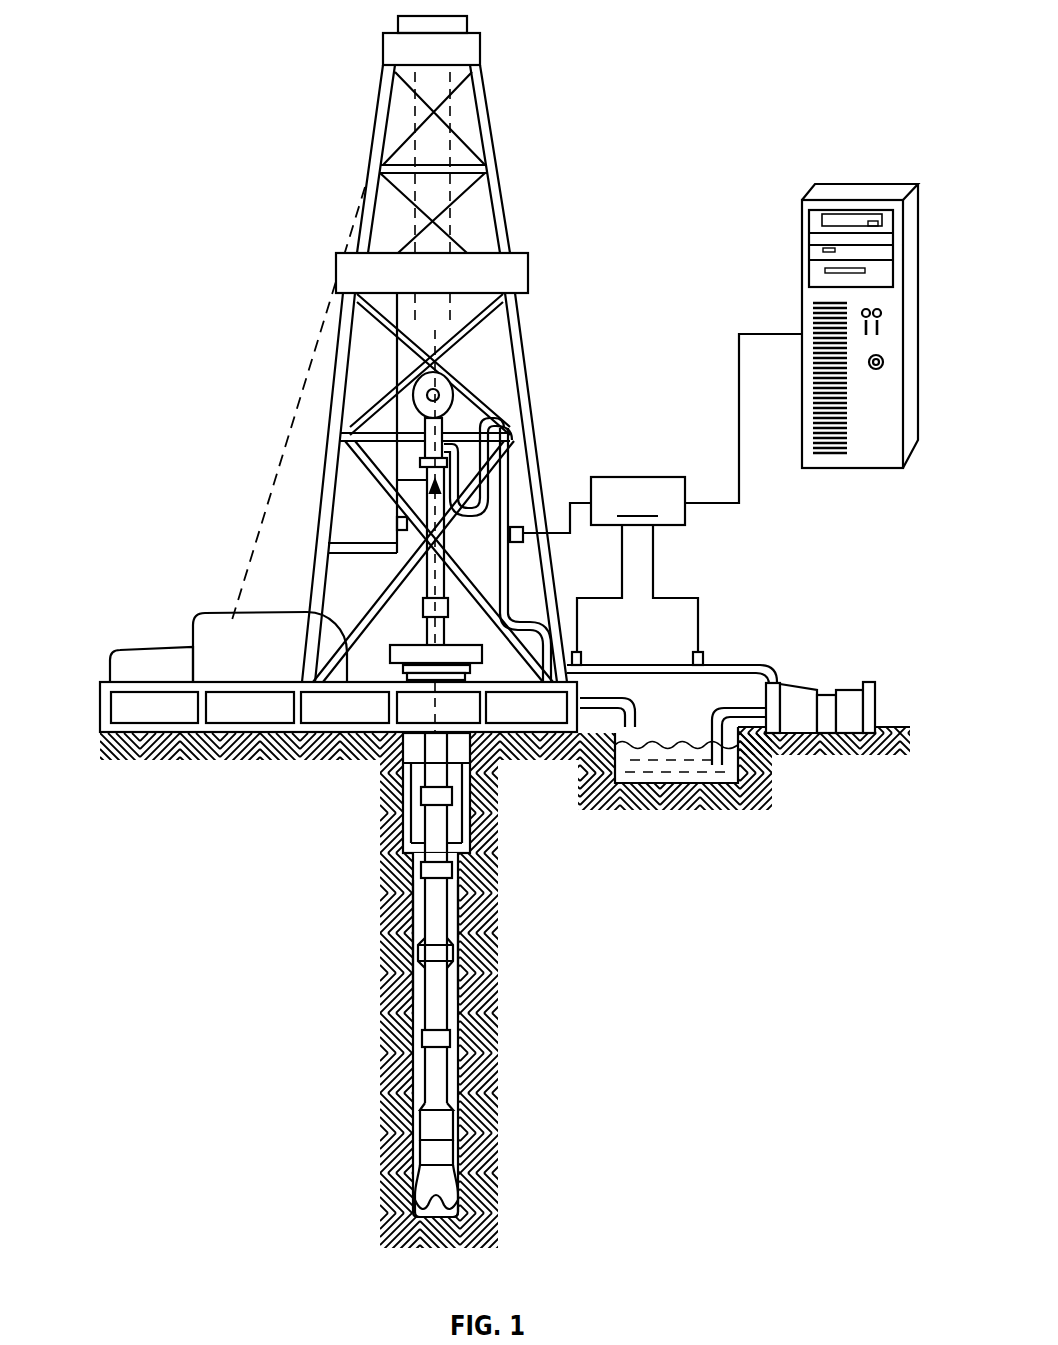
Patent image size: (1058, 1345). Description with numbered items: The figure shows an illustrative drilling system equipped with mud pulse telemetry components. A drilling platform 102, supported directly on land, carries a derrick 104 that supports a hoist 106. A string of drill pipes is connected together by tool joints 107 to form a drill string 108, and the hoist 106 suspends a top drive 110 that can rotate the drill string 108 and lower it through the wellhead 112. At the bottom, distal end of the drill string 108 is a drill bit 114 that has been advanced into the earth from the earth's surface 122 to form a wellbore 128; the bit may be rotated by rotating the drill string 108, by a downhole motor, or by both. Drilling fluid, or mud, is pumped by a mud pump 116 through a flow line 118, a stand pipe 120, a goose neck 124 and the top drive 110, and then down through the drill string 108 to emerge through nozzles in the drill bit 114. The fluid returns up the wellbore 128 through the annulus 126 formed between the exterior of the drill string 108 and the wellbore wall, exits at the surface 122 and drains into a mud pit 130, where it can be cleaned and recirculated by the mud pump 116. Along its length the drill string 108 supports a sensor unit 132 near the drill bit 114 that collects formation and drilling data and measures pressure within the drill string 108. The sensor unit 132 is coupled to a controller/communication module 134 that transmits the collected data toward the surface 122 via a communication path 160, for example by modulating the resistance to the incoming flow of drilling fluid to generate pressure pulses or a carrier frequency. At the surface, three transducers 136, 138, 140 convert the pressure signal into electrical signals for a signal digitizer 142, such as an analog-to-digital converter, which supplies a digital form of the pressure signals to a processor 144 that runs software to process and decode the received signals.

The drilling platform 102 is at (100, 710).
The derrick 104 is at (490, 105).
The hoist 106 is at (440, 396).
The tool joints 107 is at (436, 865).
The drill string 108 is at (447, 903).
The top drive 110 is at (440, 488).
The wellhead 112 is at (403, 643).
The drill bit 114 is at (450, 1200).
The mud pump 116 is at (795, 700).
The flow line 118 is at (716, 675).
The stand pipe 120 is at (510, 500).
The earth's surface 122 is at (915, 728).
The goose neck 124 is at (488, 415).
The annulus 126 is at (480, 1000).
The wellbore 128 is at (462, 935).
The mud pit 130 is at (682, 780).
The sensor unit 132 is at (427, 1148).
The controller/communication module 134 is at (427, 1128).
The transducer 136 is at (523, 540).
The transducer 138 is at (581, 656).
The transducer 140 is at (703, 656).
The signal digitizer 142 is at (696, 429).
The processor 144 is at (800, 230).
The communication path 160 is at (420, 997).